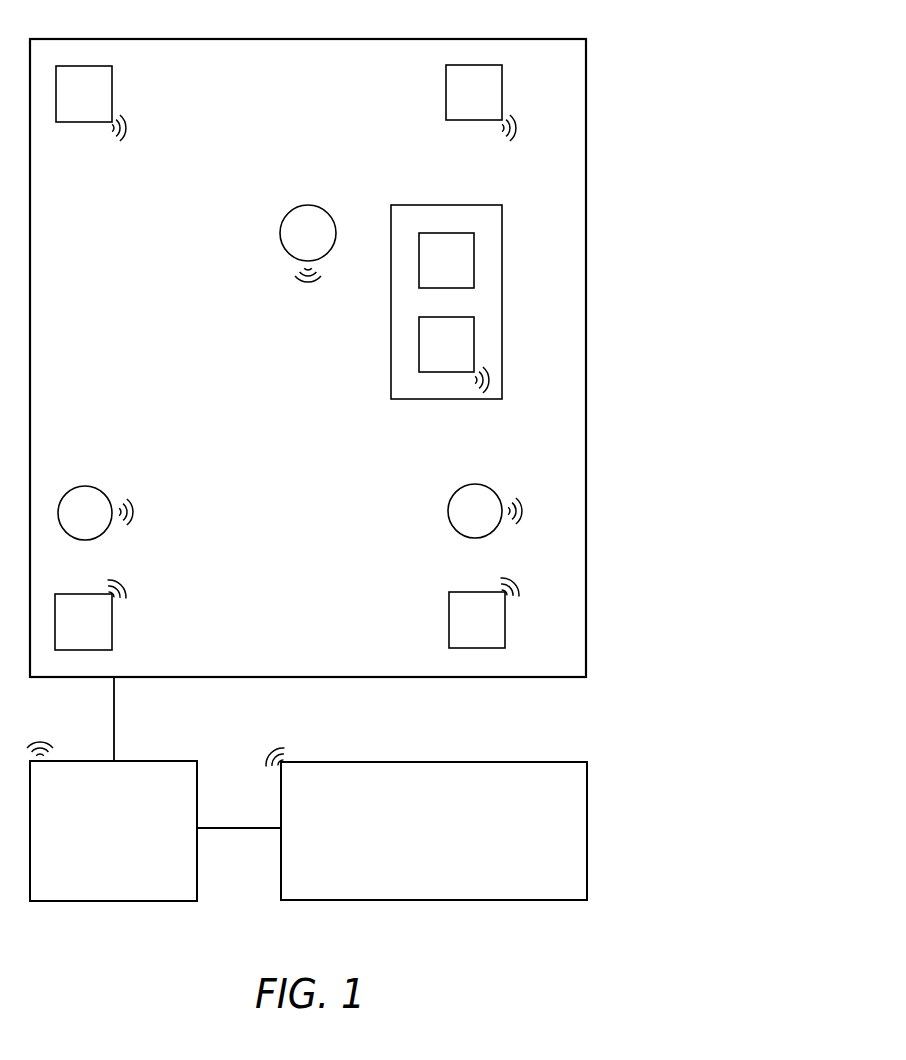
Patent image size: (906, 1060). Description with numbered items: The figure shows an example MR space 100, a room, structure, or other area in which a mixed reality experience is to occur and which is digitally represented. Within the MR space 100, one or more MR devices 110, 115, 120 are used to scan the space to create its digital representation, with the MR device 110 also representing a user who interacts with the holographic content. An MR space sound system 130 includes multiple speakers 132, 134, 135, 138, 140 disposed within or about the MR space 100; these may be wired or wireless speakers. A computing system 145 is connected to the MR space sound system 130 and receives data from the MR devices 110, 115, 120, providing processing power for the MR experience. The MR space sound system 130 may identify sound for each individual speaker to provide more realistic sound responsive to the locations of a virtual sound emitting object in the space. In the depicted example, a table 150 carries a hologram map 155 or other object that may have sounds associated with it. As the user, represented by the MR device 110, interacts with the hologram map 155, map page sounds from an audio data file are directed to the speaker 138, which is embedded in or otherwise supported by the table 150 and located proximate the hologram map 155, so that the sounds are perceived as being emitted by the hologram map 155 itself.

The MR space 100 is at (553, 39).
The MR device 110 is at (309, 205).
The MR device 115 is at (91, 487).
The MR device 120 is at (486, 485).
The MR space sound system 130 is at (152, 761).
The speaker 132 is at (72, 594).
The speaker 134 is at (82, 122).
The speaker 135 is at (471, 120).
The speaker 138 is at (474, 333).
The speaker 140 is at (467, 592).
The computing system 145 is at (540, 762).
The table 150 is at (440, 399).
The hologram map 155 is at (474, 251).